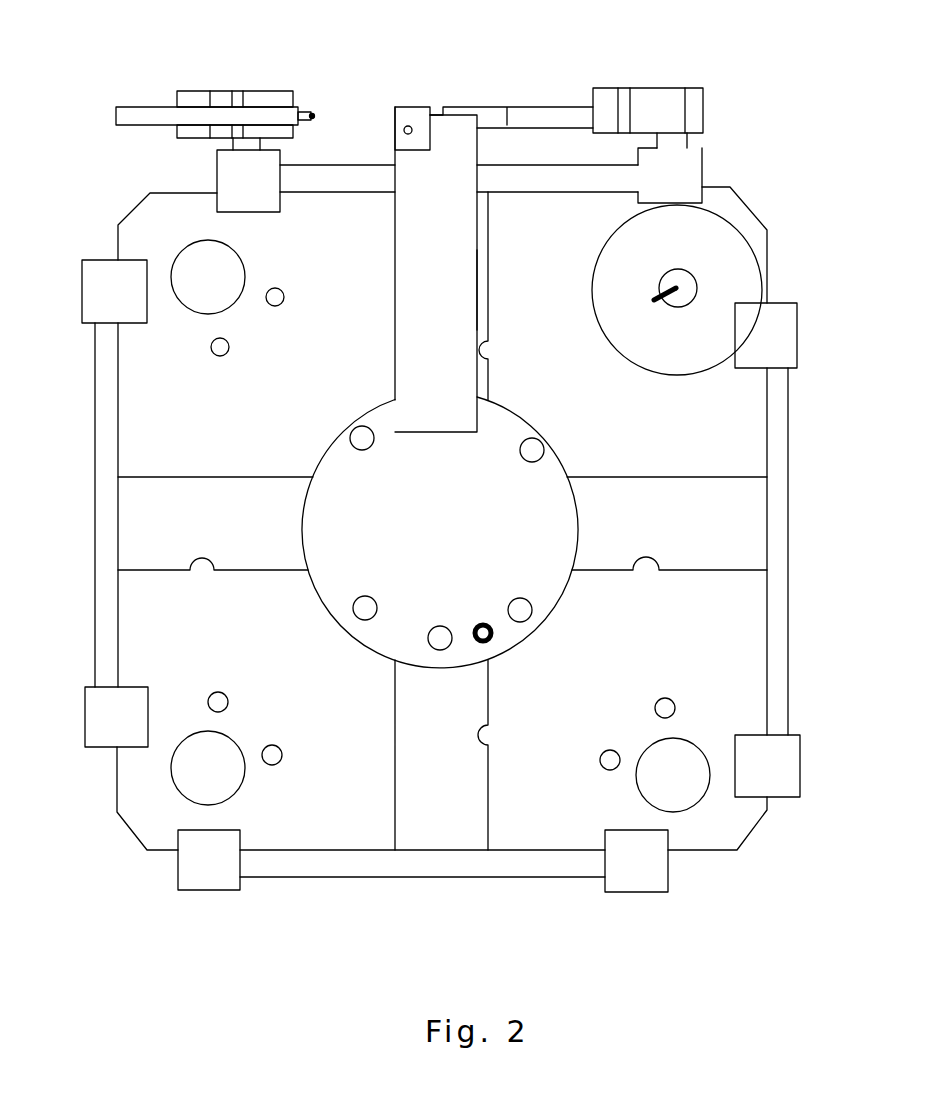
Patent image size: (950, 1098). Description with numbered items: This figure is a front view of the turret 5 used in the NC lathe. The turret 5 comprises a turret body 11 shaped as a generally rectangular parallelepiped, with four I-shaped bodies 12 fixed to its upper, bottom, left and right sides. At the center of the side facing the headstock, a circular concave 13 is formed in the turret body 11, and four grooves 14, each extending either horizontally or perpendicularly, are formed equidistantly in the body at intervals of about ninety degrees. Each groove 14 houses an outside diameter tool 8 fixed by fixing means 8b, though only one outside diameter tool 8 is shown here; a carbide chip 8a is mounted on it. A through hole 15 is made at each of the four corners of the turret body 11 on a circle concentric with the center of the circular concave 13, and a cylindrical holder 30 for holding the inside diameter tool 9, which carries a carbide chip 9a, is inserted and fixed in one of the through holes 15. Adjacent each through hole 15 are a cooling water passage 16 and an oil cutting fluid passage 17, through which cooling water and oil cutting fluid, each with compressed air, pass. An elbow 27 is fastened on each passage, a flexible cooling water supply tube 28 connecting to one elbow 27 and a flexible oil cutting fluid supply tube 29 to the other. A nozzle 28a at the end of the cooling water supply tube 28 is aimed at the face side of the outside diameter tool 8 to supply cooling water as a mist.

The turret 5 is at (752, 184).
The outside diameter tool 8 is at (462, 232).
The carbide chip 8a is at (410, 117).
The fixing means 8b is at (482, 283).
The inside diameter tool 9 is at (665, 275).
The carbide chip 9a is at (675, 308).
The turret body 11 is at (748, 452).
The I-shaped bodies 12 is at (340, 173).
The circular concave 13 is at (360, 642).
The grooves 14 is at (488, 359).
The through hole 15 is at (233, 300).
The cooling water passage 16 is at (220, 358).
The oil cutting fluid passage 17 is at (275, 308).
The elbow 27 is at (257, 100).
The cooling water supply tube 28 is at (128, 117).
The nozzle 28a is at (310, 110).
The oil cutting fluid supply tube 29 is at (533, 117).
The cylindrical holder 30 is at (738, 280).